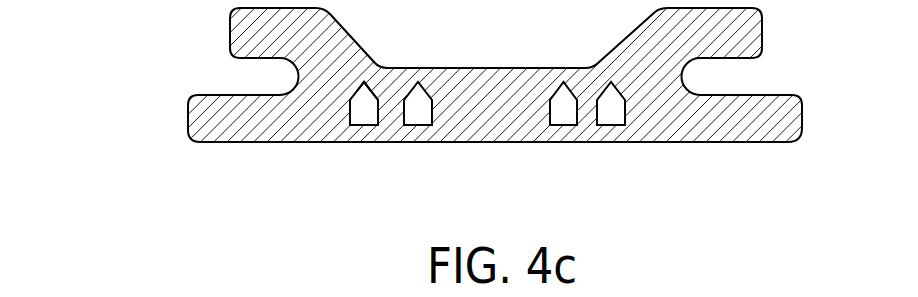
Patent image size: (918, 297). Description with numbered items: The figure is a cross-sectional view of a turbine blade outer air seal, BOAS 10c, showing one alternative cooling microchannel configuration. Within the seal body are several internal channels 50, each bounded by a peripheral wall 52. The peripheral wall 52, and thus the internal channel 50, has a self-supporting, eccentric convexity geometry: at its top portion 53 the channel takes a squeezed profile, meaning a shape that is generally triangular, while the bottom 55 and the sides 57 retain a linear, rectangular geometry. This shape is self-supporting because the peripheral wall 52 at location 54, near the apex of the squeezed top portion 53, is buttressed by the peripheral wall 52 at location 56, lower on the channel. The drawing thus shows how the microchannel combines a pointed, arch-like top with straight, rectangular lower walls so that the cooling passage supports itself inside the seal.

The BOAS 10c is at (172, 120).
The internal channel 50 is at (435, 93).
The peripheral wall 52 is at (376, 128).
The top portion 53 is at (373, 94).
The location 54 is at (364, 82).
The bottom 55 is at (362, 126).
The location 56 is at (343, 125).
The sides 57 is at (380, 111).